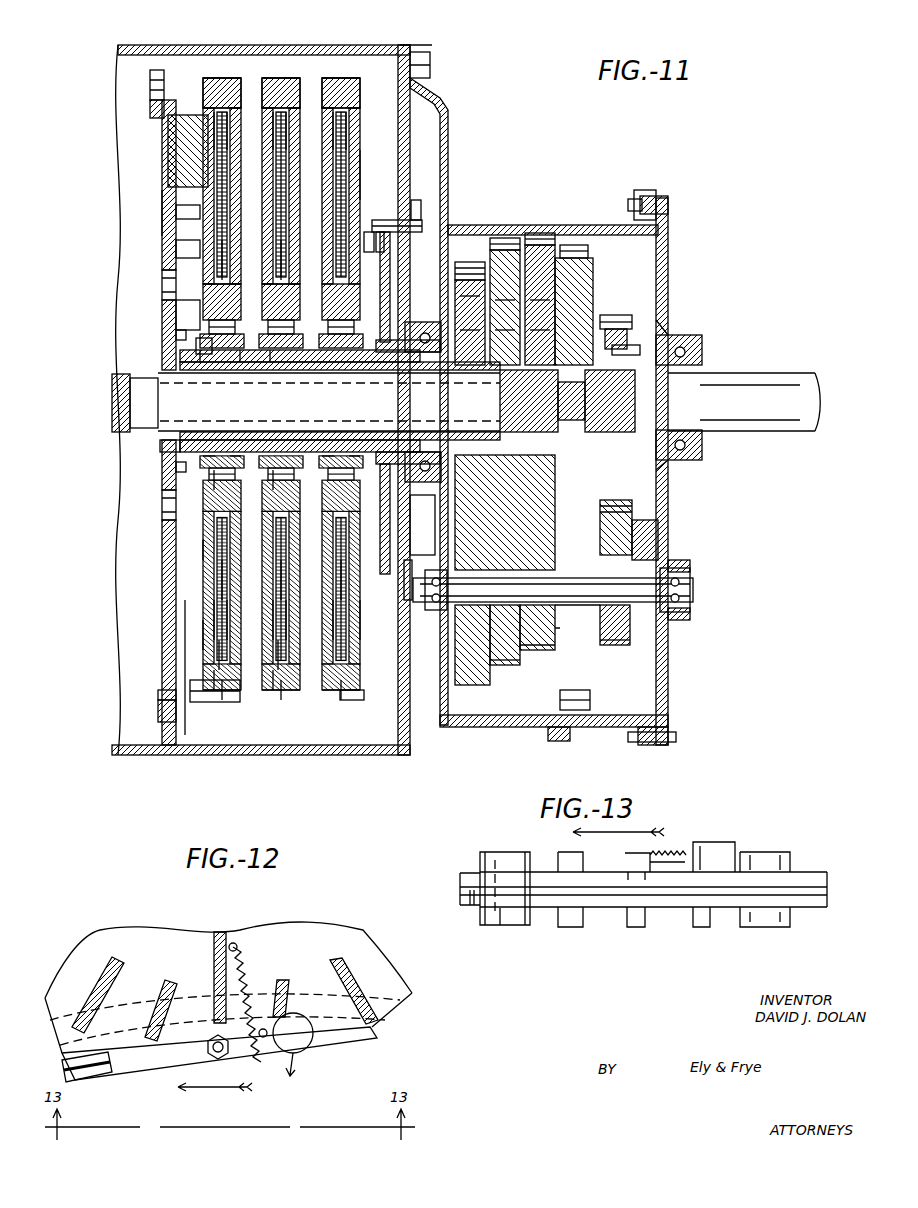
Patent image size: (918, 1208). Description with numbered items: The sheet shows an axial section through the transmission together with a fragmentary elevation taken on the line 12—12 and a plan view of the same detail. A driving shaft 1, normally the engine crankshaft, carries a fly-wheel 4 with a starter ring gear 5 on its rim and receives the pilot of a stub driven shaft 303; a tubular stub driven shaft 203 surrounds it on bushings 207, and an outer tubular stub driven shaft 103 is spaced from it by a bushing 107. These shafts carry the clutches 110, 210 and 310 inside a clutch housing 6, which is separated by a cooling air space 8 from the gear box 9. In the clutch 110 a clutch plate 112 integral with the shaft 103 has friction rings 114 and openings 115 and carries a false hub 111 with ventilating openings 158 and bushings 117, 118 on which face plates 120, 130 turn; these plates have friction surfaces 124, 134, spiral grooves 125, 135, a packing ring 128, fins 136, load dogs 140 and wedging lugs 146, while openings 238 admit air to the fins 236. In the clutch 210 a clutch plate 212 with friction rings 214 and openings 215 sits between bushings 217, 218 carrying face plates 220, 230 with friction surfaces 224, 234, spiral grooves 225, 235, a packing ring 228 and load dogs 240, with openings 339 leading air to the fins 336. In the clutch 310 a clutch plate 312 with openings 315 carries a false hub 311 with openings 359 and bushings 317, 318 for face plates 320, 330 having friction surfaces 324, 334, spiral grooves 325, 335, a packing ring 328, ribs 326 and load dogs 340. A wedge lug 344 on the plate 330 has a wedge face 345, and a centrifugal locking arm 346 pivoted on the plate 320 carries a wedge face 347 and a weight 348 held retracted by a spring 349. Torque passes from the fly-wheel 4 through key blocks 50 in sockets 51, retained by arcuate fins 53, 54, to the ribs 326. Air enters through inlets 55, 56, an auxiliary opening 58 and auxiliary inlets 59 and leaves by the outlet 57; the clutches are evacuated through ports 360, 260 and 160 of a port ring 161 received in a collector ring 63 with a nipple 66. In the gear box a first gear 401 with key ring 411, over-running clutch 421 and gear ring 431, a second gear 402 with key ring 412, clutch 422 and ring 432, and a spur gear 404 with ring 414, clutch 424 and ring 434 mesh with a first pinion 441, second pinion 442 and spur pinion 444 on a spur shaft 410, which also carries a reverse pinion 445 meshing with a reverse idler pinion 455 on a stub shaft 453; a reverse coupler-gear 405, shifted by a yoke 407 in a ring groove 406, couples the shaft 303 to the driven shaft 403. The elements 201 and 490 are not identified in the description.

In FIG. 11, the input shaft 1 is at (112, 418).
In FIG. 11, the housing wall 4 is at (162, 596).
In FIG. 11, the housing bottom member 5 is at (160, 720).
In FIG. 11, the housing bottom wall 6 is at (128, 757).
In FIG. 11, the housing conduit wall 8 is at (424, 112).
In FIG. 11, the flange bolt 9 is at (660, 198).
In FIG. 11, the section line 12- 12 is at (196, 608).
In FIG. 11, the block 50 is at (176, 148).
In FIG. 11, the wall portion 51 is at (166, 192).
In FIG. 11, the retainer 53 is at (190, 214).
In FIG. 11, the cap member 54 is at (165, 98).
In FIG. 11, the bearing 55 is at (166, 275).
In FIG. 11, the spacer 56 is at (414, 208).
In FIG. 11, the housing wall 57 is at (322, 48).
In FIG. 11, the bearing 58 is at (412, 312).
In FIG. 11, the bearing retainer 59 is at (160, 335).
In FIG. 11, the support 63 is at (410, 540).
In FIG. 11, the flange 66 is at (380, 228).
In FIG. 11, the main shaft 103 is at (404, 410).
In FIG. 11, the sleeve 107 is at (374, 378).
In FIG. 11, the clutch unit 110 is at (342, 73).
In FIG. 11, the sleeve 111 is at (368, 330).
In FIG. 11, the clutch member 112 is at (356, 195).
In FIG. 11, the clutch plate 114 is at (356, 168).
In FIG. 11, the clutch member 115 is at (354, 566).
In FIG. 11, the hub 117 is at (308, 462).
In FIG. 11, the hub 118 is at (334, 462).
In FIG. 11, the drum 120 is at (330, 692).
In FIG. 11, the plate 124 is at (286, 638).
In FIG. 11, the plate 125 is at (286, 672).
In FIG. 11, the ring 128 is at (358, 100).
In FIG. 11, the ring 130 is at (366, 692).
In FIG. 11, the plate 134 is at (346, 612).
In FIG. 11, the plate 135 is at (366, 636).
In FIG. 11, the ring 136 is at (356, 142).
In FIG. 11, the clutch assembly 140 is at (343, 78).
In FIG. 11, the member 146 is at (352, 700).
In FIG. 11, the bearing 158 is at (418, 322).
In FIG. 11, the member 160 is at (352, 232).
In FIG. 11, the member 161 is at (380, 232).
In FIG. 11, the shaft portion 201 is at (272, 372).
In FIG. 11, the sleeve 203 is at (330, 374).
In FIG. 11, the hub 207 is at (492, 420).
In FIG. 11, the clutch unit 210 is at (282, 73).
In FIG. 11, the clutch member 212 is at (298, 260).
In FIG. 11, the clutch plate 214 is at (296, 172).
In FIG. 11, the clutch member 215 is at (286, 570).
In FIG. 11, the shaft portion 217 is at (250, 376).
In FIG. 11, the sleeve 218 is at (296, 372).
In FIG. 11, the drum 220 is at (268, 692).
In FIG. 11, the plate 224 is at (226, 652).
In FIG. 11, the plate 225 is at (226, 672).
In FIG. 11, the ring 228 is at (296, 100).
In FIG. 11, the ring 230 is at (284, 690).
In FIG. 11, the plate 234 is at (286, 614).
In FIG. 11, the plate 235 is at (286, 654).
In FIG. 11, the ring 236 is at (296, 140).
In FIG. 11, the plate 238 is at (298, 490).
In FIG. 11, the clutch assembly 240 is at (282, 78).
In FIG. 11, the gear 260 is at (302, 320).
In FIG. 11, the bearing sleeve 303 is at (160, 442).
In FIG. 11, the clutch unit 310 is at (224, 73).
In FIG. 11, the sleeve 311 is at (200, 310).
In FIG. 11, the clutch member 312 is at (240, 260).
In FIG. 11, the clutch member 315 is at (226, 570).
In FIG. 11, the hub 317 is at (204, 462).
In FIG. 11, the hub 318 is at (232, 462).
In FIG. 11, the drum 320 is at (222, 700).
In FIG. 12, the drum 320 is at (380, 1000).
In FIG. 13, the drum 320 is at (800, 882).
In FIG. 11, the plate 324 is at (206, 620).
In FIG. 11, the plate 325 is at (206, 546).
In FIG. 11, the ring 326 is at (200, 248).
In FIG. 11, the ring 328 is at (236, 100).
In FIG. 13, the ring 328 is at (724, 895).
In FIG. 11, the ring 330 is at (232, 690).
In FIG. 13, the ring 330 is at (803, 908).
In FIG. 11, the plate 334 is at (226, 612).
In FIG. 11, the plate 335 is at (226, 632).
In FIG. 11, the ring 336 is at (236, 140).
In FIG. 11, the plate 339 is at (244, 480).
In FIG. 11, the clutch assembly 340 is at (226, 78).
In FIG. 11, the slot 344 is at (238, 170).
In FIG. 12, the slot 344 is at (72, 990).
In FIG. 13, the slot 344 is at (464, 903).
In FIG. 12, the slot 345 is at (156, 1000).
In FIG. 13, the slot 345 is at (474, 910).
In FIG. 11, the lever 346 is at (196, 690).
In FIG. 12, the lever 346 is at (184, 1035).
In FIG. 13, the lever 346 is at (510, 860).
In FIG. 12, the stop 347 is at (94, 1072).
In FIG. 13, the stop 347 is at (505, 912).
In FIG. 12, the roller 348 is at (296, 1014).
In FIG. 13, the roller 348 is at (722, 846).
In FIG. 12, the spring 349 is at (250, 972).
In FIG. 13, the spring 349 is at (668, 852).
In FIG. 11, the bearing 359 is at (198, 350).
In FIG. 11, the gear 360 is at (244, 320).
In FIG. 11, the gear 401 is at (462, 320).
In FIG. 11, the gear 402 is at (500, 320).
In FIG. 11, the output shaft 403 is at (750, 372).
In FIG. 11, the gear 404 is at (532, 320).
In FIG. 11, the gear 405 is at (590, 300).
In FIG. 11, the bearing retainer 406 is at (620, 352).
In FIG. 11, the gear 407 is at (612, 326).
In FIG. 11, the countershaft 410 is at (690, 588).
In FIG. 11, the gear teeth 411 is at (470, 262).
In FIG. 11, the gear teeth 412 is at (506, 250).
In FIG. 11, the gear teeth 414 is at (538, 260).
In FIG. 11, the gear 421 is at (476, 270).
In FIG. 11, the gear 422 is at (512, 270).
In FIG. 11, the gear 424 is at (544, 270).
In FIG. 11, the gear 431 is at (482, 290).
In FIG. 11, the gear 432 is at (518, 290).
In FIG. 11, the gear 434 is at (550, 290).
In FIG. 11, the gear 441 is at (486, 690).
In FIG. 11, the gear 442 is at (518, 668).
In FIG. 11, the gear 444 is at (555, 650).
In FIG. 11, the gear 445 is at (626, 645).
In FIG. 11, the gear 453 is at (660, 540).
In FIG. 11, the gear 455 is at (634, 510).
In FIG. 11, the gear cluster 490 is at (560, 628).